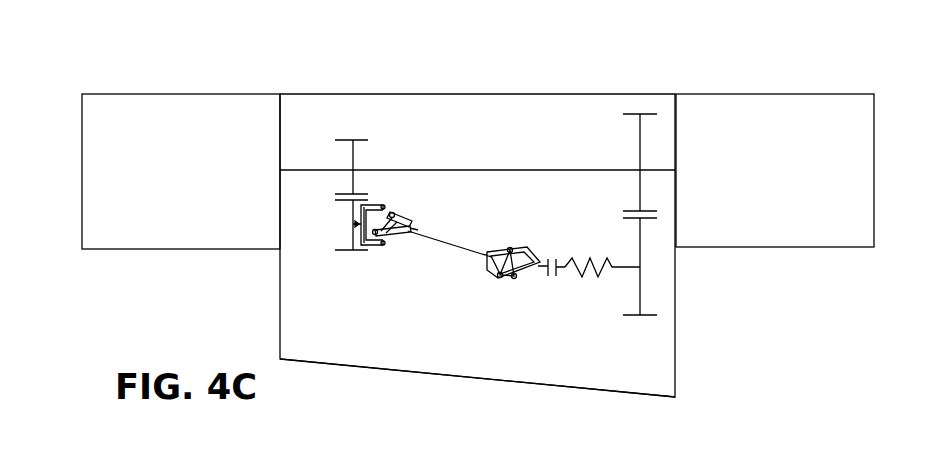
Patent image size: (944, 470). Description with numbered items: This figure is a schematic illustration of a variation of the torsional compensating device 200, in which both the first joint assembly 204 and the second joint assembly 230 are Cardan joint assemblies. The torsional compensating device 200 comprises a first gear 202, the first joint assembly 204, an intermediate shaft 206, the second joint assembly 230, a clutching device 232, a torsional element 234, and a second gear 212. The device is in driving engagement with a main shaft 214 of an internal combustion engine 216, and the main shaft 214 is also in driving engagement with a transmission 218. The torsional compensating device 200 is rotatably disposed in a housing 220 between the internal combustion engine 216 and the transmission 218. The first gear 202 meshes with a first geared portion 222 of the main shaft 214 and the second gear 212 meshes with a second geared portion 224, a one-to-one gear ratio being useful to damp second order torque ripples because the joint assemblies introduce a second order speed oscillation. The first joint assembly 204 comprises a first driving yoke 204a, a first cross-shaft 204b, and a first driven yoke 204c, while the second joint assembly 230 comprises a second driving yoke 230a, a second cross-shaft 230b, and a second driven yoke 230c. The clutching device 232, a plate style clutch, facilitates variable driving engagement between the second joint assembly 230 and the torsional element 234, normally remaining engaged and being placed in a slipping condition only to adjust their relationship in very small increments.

The torsional compensating device 200 is at (358, 376).
The first gear 202 is at (350, 237).
The first joint assembly 204 is at (423, 245).
The first driving yoke 204a is at (378, 205).
The first cross-shaft 204b is at (398, 213).
The first driven yoke 204c is at (397, 246).
The intermediate shaft 206 is at (460, 247).
The second gear 212 is at (640, 287).
The main shaft 214 is at (488, 170).
The internal combustion engine 216 is at (180, 94).
The transmission 218 is at (773, 94).
The housing 220 is at (626, 393).
The first geared portion 222 is at (353, 160).
The second geared portion 224 is at (640, 139).
The second joint assembly 230 is at (505, 322).
The second driving yoke 230a is at (493, 274).
The second cross-shaft 230b is at (506, 281).
The second driven yoke 230c is at (527, 252).
The clutching device 232 is at (563, 260).
The torsional element 234 is at (585, 281).